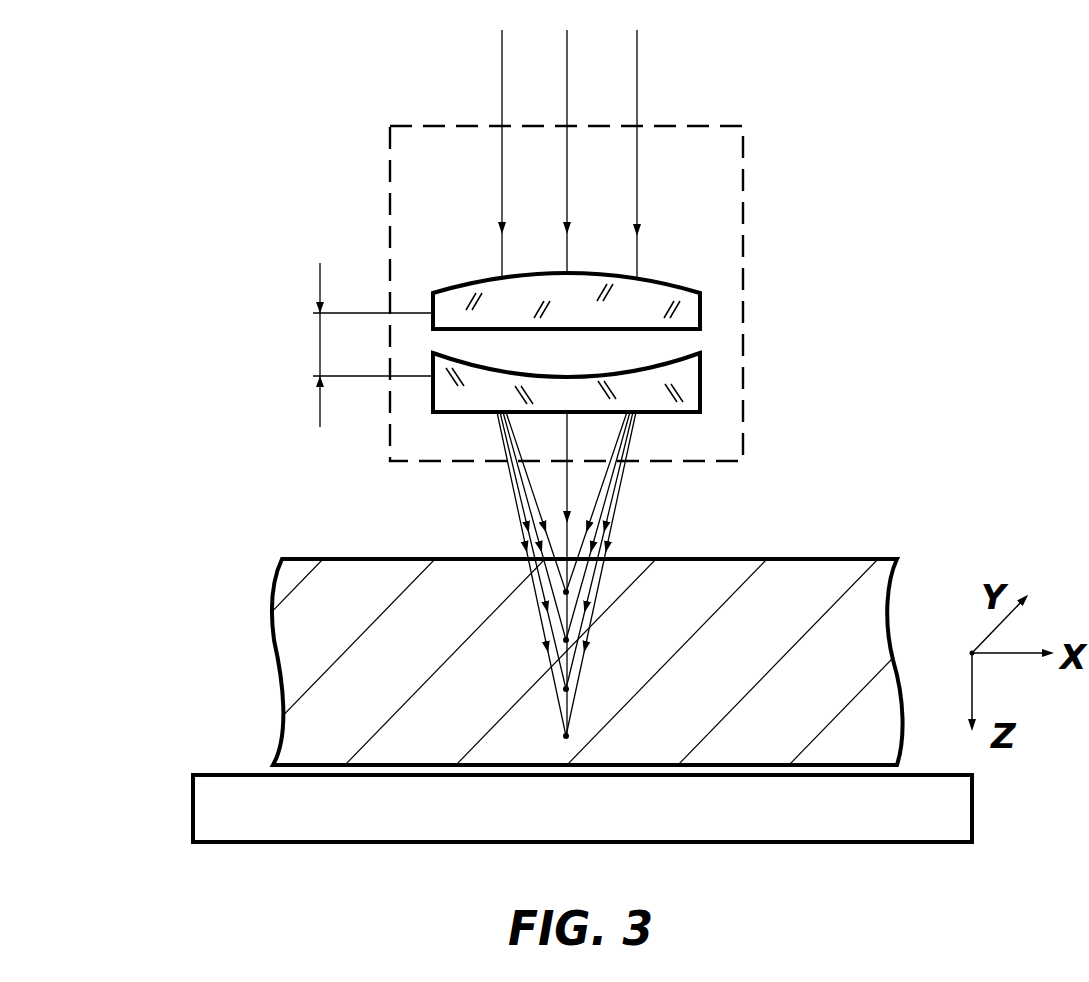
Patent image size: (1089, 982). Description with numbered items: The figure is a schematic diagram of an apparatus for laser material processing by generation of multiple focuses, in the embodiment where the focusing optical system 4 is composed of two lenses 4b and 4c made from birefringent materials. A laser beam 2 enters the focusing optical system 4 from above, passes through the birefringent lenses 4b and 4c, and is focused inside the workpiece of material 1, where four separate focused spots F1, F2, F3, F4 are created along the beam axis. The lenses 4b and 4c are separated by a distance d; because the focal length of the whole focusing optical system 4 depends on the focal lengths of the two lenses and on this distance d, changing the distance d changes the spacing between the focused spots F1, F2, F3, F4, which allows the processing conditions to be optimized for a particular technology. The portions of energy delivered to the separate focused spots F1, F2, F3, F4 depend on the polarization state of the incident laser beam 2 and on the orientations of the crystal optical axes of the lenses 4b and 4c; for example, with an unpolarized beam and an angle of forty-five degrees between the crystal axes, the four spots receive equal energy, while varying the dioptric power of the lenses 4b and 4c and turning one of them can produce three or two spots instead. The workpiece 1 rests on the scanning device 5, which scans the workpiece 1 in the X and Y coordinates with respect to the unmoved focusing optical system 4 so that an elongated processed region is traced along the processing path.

The workpiece of material to be processed 1 is at (270, 630).
The laser beam 2 is at (482, 88).
The focusing optical system forming multiple focuses 4 is at (390, 183).
The lens made from birefringent material 4b is at (703, 305).
The lens made from birefringent material 4c is at (703, 381).
The scanning device 5 is at (188, 797).
The distance between the lenses d is at (356, 345).
The focused spot F1 is at (570, 592).
The focused spot F2 is at (566, 640).
The focused spot F3 is at (568, 689).
The focused spot F4 is at (566, 736).